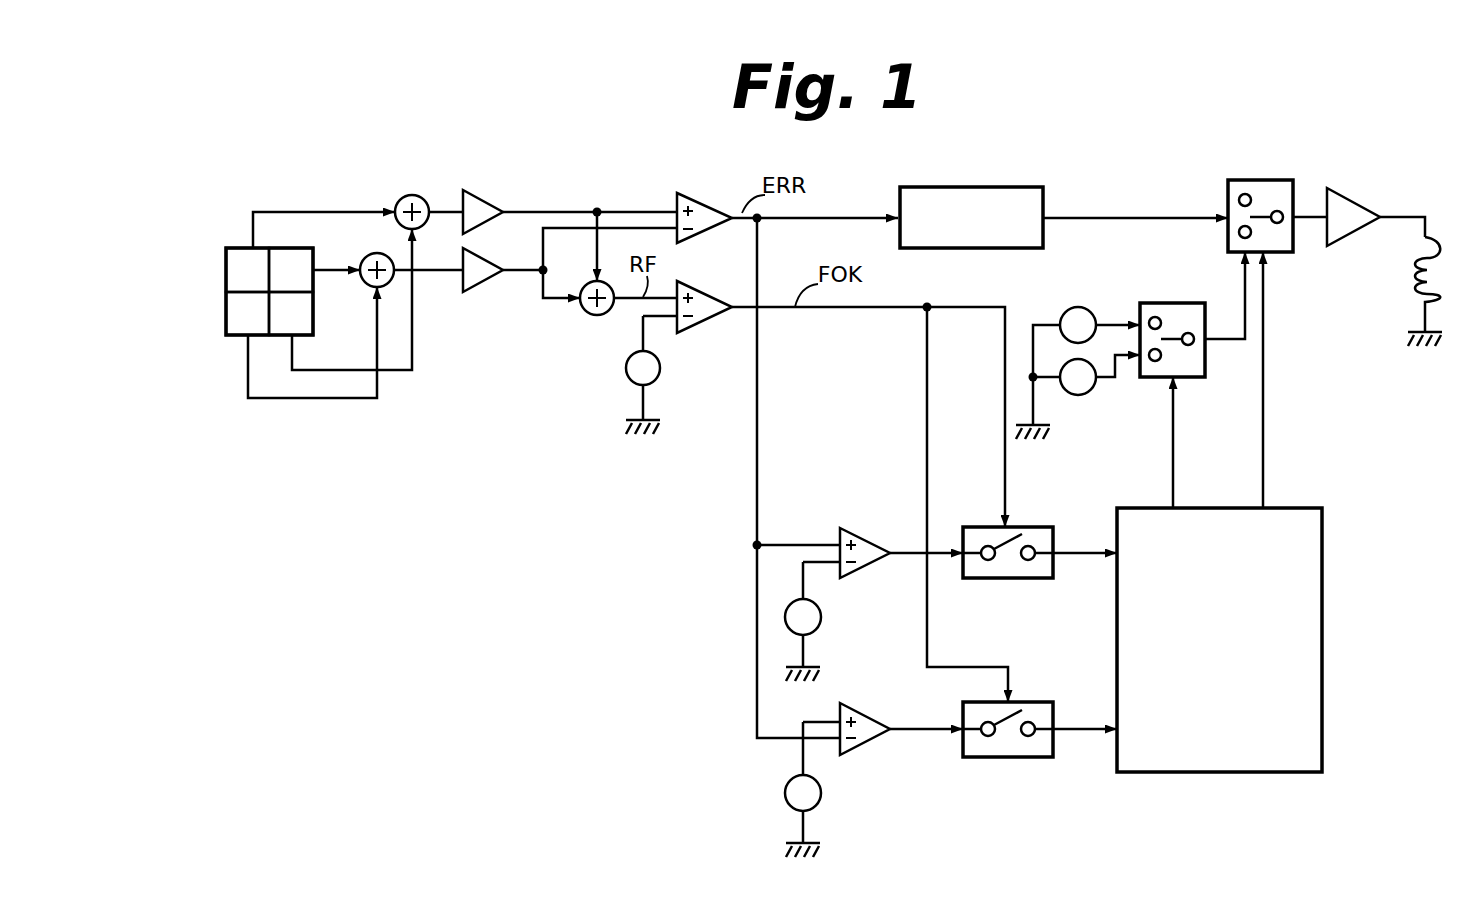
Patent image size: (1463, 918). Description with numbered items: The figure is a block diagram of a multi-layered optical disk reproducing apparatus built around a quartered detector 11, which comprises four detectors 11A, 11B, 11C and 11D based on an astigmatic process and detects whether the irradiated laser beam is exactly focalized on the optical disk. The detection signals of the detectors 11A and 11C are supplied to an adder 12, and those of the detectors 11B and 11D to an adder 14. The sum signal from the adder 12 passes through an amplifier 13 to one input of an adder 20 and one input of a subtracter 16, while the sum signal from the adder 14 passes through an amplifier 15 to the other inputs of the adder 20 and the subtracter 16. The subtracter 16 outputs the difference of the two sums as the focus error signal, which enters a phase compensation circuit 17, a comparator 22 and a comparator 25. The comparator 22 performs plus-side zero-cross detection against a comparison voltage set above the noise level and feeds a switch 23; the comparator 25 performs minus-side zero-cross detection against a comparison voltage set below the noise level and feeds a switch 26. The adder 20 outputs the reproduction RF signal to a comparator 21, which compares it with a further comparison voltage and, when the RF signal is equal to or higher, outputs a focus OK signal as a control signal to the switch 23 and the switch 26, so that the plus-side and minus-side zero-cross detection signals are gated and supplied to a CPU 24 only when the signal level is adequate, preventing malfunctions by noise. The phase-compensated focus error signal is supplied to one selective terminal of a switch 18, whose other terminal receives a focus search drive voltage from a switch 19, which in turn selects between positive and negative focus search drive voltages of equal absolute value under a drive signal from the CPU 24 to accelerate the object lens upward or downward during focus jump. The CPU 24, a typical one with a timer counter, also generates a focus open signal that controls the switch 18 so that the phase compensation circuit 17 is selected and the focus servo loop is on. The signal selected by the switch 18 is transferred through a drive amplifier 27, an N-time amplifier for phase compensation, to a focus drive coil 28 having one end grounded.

The quartered detector 11 is at (265, 293).
The detector 11A is at (238, 248).
The detector 11B is at (240, 337).
The detector 11C is at (314, 326).
The detector 11D is at (290, 250).
The adder 12 is at (410, 195).
The amplifier 13 is at (481, 197).
The adder 14 is at (386, 286).
The amplifier 15 is at (478, 289).
The subtracter 16 is at (700, 201).
The phase compensation circuit 17 is at (968, 187).
The switch 18 is at (1258, 180).
The switch 19 is at (1170, 303).
The adder 20 is at (597, 316).
The comparator 21 is at (708, 322).
The comparator 22 is at (862, 531).
The switch 23 is at (1009, 585).
The CPU 24 is at (1322, 637).
The comparator 25 is at (862, 707).
The switch 26 is at (1009, 760).
The drive amplifier 27 is at (1348, 191).
The focus drive coil 28 is at (1414, 266).